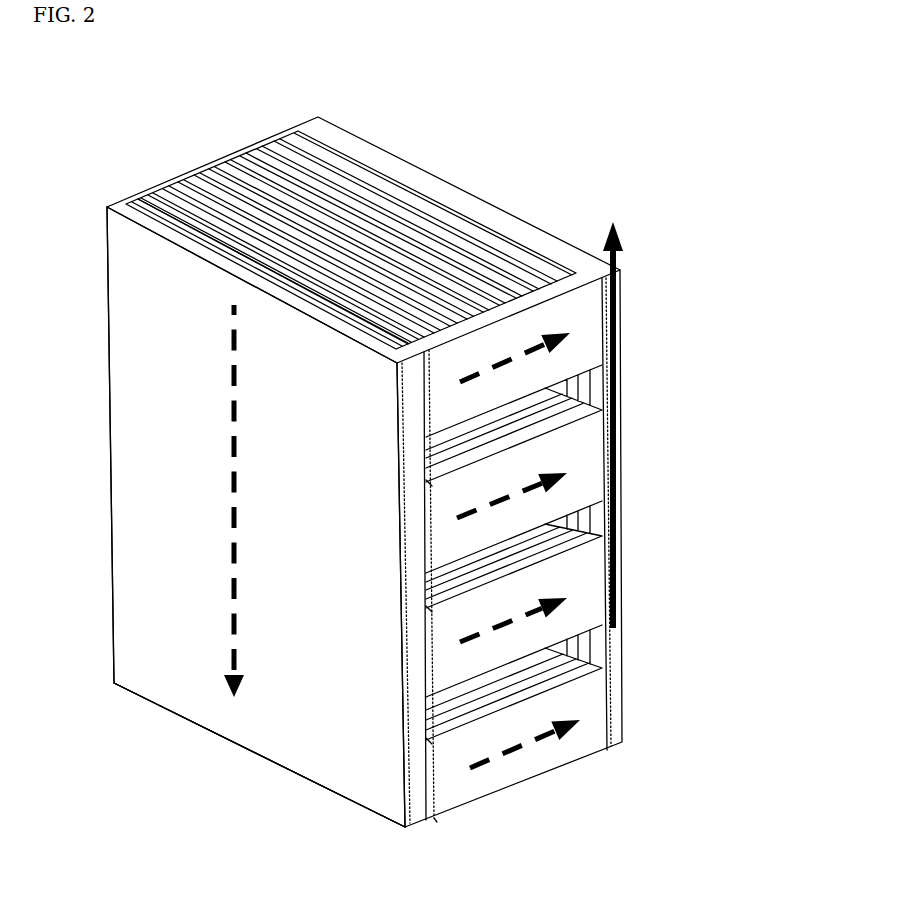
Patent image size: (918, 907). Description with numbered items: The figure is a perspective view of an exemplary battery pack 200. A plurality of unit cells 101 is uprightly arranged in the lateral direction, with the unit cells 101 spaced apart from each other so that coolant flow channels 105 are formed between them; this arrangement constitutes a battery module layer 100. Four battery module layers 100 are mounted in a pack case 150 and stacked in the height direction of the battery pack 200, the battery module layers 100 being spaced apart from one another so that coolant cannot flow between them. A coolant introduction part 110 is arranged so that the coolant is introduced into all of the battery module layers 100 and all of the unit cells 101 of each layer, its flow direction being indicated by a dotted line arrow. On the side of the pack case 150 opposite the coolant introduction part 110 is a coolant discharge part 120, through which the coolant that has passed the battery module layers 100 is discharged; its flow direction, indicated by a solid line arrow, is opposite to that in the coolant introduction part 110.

The battery pack 200 is at (50, 89).
The battery module layer 100 is at (622, 712).
The coolant introduction part 110 is at (131, 212).
The coolant flow channel 105 is at (167, 193).
The coolant discharge part 120 is at (487, 217).
The unit cell 101 is at (580, 277).
The pack case 150 is at (115, 683).